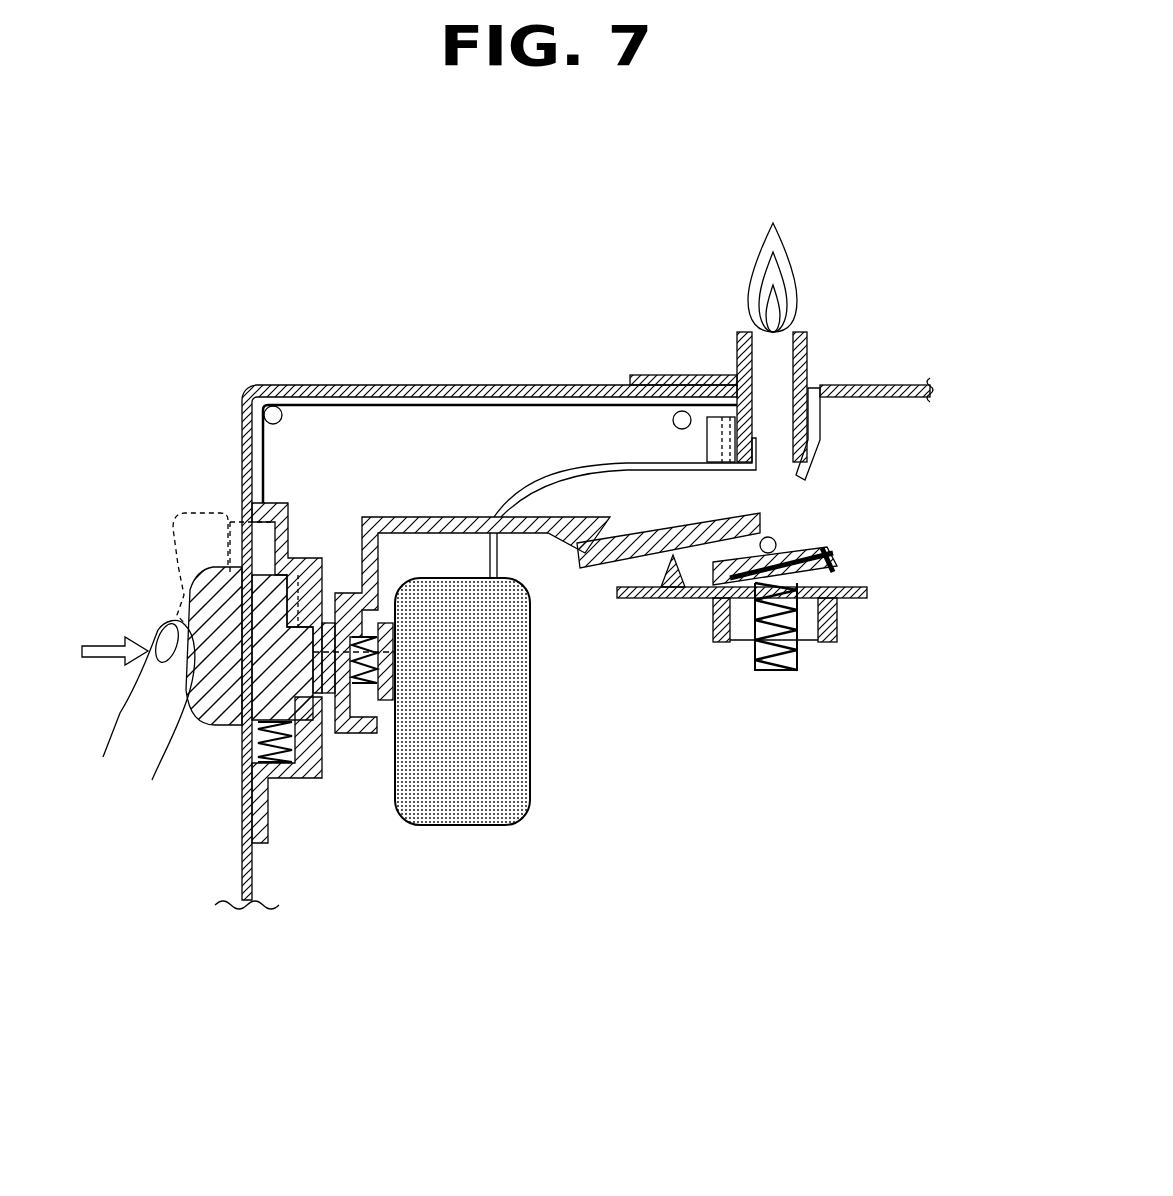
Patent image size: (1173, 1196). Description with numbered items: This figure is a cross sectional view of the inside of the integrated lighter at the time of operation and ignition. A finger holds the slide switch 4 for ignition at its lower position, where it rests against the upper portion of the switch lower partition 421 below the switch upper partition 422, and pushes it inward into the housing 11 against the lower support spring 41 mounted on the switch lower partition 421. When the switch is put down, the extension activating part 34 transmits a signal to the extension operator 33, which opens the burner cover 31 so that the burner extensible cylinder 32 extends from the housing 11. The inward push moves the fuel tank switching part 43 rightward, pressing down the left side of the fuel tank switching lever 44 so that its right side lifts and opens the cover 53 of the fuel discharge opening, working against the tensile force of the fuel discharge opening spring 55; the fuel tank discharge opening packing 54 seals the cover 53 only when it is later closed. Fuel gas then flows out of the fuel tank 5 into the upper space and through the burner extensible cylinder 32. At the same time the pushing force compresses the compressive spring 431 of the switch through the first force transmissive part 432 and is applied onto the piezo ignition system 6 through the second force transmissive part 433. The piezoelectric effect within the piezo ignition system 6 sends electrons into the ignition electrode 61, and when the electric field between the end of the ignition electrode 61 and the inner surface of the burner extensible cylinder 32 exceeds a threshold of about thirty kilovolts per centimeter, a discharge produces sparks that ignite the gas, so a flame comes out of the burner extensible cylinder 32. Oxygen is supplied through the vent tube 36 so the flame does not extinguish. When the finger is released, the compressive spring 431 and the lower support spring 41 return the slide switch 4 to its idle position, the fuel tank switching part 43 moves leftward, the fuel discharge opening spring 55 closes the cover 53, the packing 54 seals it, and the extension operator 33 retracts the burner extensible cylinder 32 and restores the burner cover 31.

The housing 11 is at (327, 385).
The burner cover 31 is at (723, 415).
The burner extensible cylinder 32 is at (808, 345).
The extension operator 33 is at (708, 376).
The extension activating part 34 is at (540, 403).
The vent tube 36 is at (830, 445).
The slide switch for ignition 4 is at (198, 570).
The lower support spring 41 is at (256, 765).
The switch lower partition 421 is at (247, 832).
The switch upper partition 422 is at (244, 500).
The fuel tank switching part 43 is at (422, 517).
The compressive spring of the switch 431 is at (360, 640).
The first force transmissive part 432 is at (330, 693).
The second force transmissive part 433 is at (385, 700).
The fuel tank switching lever 44 is at (603, 553).
The fuel tank 5 is at (845, 618).
The cover of the fuel discharge opening 53 is at (790, 548).
The fuel tank discharge opening packing 54 is at (838, 568).
The fuel discharge opening spring 55 is at (777, 672).
The piezo ignition system 6 is at (487, 822).
The ignition electrode 61 is at (633, 460).